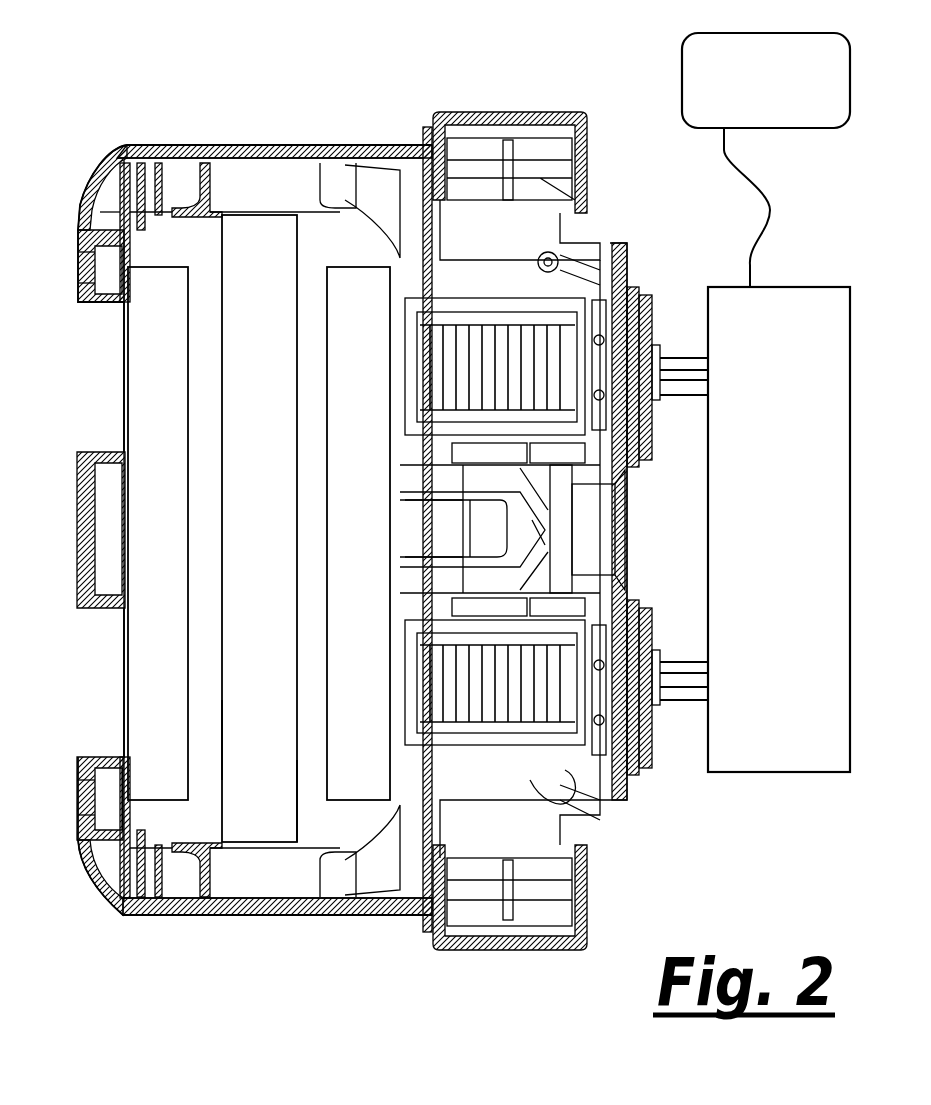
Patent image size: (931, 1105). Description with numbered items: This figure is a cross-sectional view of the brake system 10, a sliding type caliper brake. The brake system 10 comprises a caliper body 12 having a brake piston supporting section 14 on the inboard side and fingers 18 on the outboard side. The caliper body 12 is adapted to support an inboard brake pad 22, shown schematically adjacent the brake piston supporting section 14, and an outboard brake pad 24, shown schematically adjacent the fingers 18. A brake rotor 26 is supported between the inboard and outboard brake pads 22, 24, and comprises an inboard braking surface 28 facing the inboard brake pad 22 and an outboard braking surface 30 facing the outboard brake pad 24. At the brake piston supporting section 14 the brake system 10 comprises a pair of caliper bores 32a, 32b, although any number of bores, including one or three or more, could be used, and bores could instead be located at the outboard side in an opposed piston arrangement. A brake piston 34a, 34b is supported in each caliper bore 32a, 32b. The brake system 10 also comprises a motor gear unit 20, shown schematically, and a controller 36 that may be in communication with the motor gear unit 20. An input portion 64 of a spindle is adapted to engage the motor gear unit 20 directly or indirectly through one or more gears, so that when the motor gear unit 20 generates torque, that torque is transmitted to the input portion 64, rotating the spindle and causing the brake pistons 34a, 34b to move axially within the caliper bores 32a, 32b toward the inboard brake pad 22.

The brake system 10 is at (181, 40).
The caliper body 12 is at (354, 153).
The brake piston supporting section 14 is at (592, 240).
The fingers 18 is at (86, 268).
The motor gear unit 20 is at (791, 505).
The inboard brake pad 22 is at (371, 445).
The outboard brake pad 24 is at (166, 455).
The brake rotor 26 is at (268, 513).
The inboard braking surface 28 is at (297, 817).
The outboard braking surface 30 is at (222, 737).
The caliper bore 32a is at (493, 293).
The caliper bore 32b is at (487, 790).
The brake piston 34a is at (578, 300).
The brake piston 34b is at (575, 768).
The controller 36 is at (780, 91).
The input portion 64 is at (683, 388).